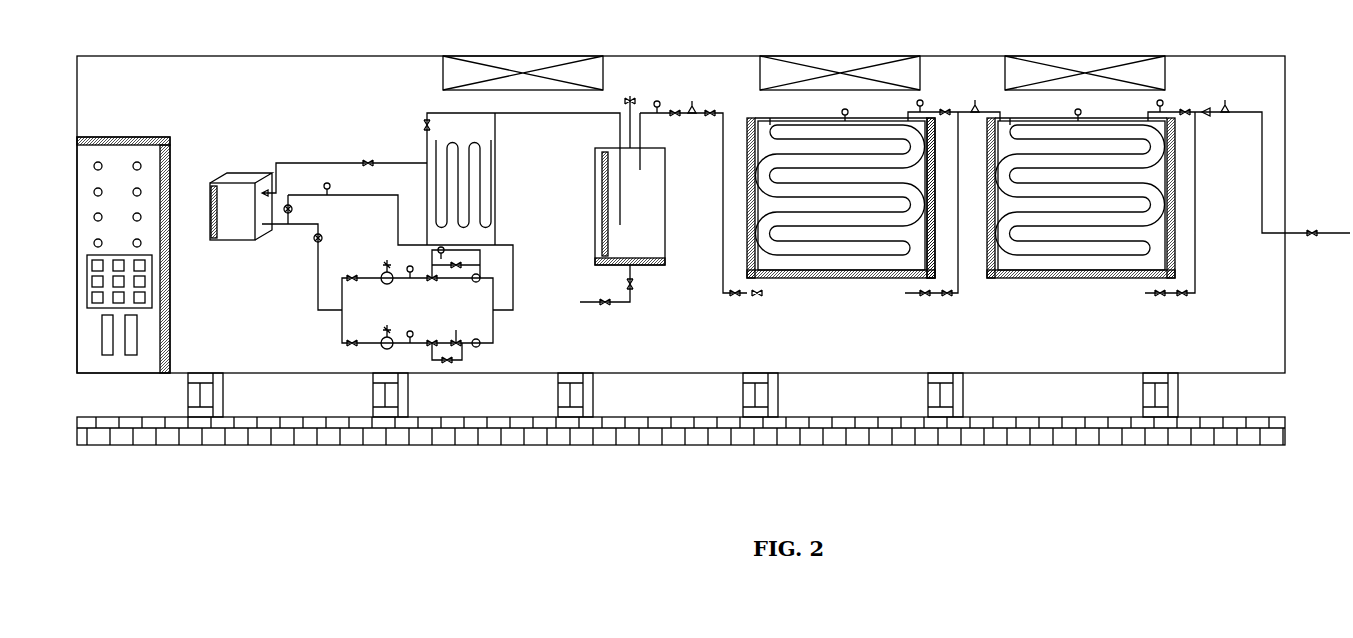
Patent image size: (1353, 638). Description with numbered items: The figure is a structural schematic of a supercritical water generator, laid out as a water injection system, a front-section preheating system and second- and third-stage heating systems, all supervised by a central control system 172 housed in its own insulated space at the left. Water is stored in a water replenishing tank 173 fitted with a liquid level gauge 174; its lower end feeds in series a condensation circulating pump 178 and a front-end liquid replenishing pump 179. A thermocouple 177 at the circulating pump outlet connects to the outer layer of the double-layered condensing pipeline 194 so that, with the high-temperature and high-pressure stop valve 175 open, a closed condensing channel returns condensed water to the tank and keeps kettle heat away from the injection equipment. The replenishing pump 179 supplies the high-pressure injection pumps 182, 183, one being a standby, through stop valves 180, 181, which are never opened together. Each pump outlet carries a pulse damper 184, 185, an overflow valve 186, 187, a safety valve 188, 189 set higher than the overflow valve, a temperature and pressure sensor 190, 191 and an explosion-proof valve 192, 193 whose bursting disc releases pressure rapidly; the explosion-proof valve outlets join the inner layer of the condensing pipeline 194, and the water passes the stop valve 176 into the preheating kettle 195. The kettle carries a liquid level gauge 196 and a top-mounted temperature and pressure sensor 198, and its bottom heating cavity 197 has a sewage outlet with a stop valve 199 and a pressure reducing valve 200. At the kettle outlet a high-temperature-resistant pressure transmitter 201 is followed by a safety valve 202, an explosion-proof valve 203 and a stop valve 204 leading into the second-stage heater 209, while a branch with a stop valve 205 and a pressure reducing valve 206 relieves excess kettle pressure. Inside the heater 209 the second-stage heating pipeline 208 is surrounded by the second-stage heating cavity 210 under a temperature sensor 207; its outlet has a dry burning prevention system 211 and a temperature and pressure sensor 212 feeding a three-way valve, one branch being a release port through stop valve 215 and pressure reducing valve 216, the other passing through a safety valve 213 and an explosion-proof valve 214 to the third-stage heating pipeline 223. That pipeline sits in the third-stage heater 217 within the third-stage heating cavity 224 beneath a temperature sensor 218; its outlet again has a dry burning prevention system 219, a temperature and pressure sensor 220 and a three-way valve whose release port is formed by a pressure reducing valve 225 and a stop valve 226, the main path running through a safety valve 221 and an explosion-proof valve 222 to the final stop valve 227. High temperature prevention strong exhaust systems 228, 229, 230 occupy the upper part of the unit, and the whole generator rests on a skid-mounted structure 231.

The central control system 172 is at (84, 227).
The water replenishing tank 173 is at (240, 180).
The liquid level gauge 174 is at (214, 207).
The high-temperature and high-pressure stop valve 175 is at (366, 160).
The high-temperature and high-pressure stop valve 176 is at (425, 125).
The thermocouple 177 is at (339, 188).
The condensation circulating pump 178 is at (301, 209).
The front-end liquid replenishing pump 179 is at (331, 241).
The stop valve 180 is at (355, 287).
The stop valve 181 is at (355, 353).
The high-pressure injection pump 182 is at (383, 280).
The high-pressure injection pump 183 is at (383, 346).
The pulse damper 184 is at (410, 282).
The pulse damper 185 is at (410, 348).
The overflow valve 186 is at (456, 262).
The overflow valve 187 is at (453, 360).
The safety valve 188 is at (440, 287).
The safety valve 189 is at (440, 352).
The temperature and pressure sensor 190 is at (456, 277).
The temperature and pressure sensor 191 is at (457, 331).
The explosion-proof valve 192 is at (483, 287).
The explosion-proof valve 193 is at (483, 352).
The condensing pipeline 194 is at (470, 150).
The preheating kettle 195 is at (660, 210).
The liquid level gauge 196 is at (600, 207).
The heating cavity 197 is at (648, 265).
The temperature and pressure sensor 198 is at (626, 95).
The high-temperature and high-pressure stop valve 199 is at (616, 283).
The high-temperature pressure reducing valve 200 is at (606, 312).
The high-temperature-resistant pressure transmitter 201 is at (657, 117).
The safety valve 202 is at (683, 122).
The explosion-proof valve 203 is at (692, 100).
The high-temperature and high-pressure stop valve 204 is at (718, 102).
The high-temperature stop valve 205 is at (738, 304).
The high-temperature pressure reducing valve 206 is at (767, 304).
The temperature sensor 207 is at (852, 109).
The second-stage heating pipeline 208 is at (840, 190).
The second-stage heater 209 is at (770, 120).
The second-stage heating cavity 210 is at (832, 278).
The dry burning prevention system 211 is at (905, 104).
The temperature and pressure sensor 212 is at (943, 198).
The safety valve 213 is at (959, 105).
The explosion-proof valve 214 is at (988, 101).
The high-temperature and high-pressure stop valve 215 is at (951, 304).
The high-temperature pressure reducing valve 216 is at (921, 304).
The third-stage heater 217 is at (1020, 110).
The temperature sensor 218 is at (1088, 109).
The dry burning prevention system 219 is at (1148, 104).
The temperature and pressure sensor 220 is at (1182, 102).
The safety valve 221 is at (1207, 106).
The explosion-proof valve 222 is at (1232, 98).
The third-stage heating pipeline 223 is at (1080, 190).
The third-stage heating cavity 224 is at (1068, 278).
The high-temperature pressure reducing valve 225 is at (1154, 304).
The high-temperature and high-pressure stop valve 226 is at (1187, 304).
The high-temperature and high-pressure stop valve 227 is at (1313, 226).
The high temperature prevention strong exhaust system 228 is at (1085, 64).
The high temperature prevention strong exhaust system 229 is at (840, 64).
The high temperature prevention strong exhaust system 230 is at (523, 64).
The skid-mounted structure 231 is at (788, 446).